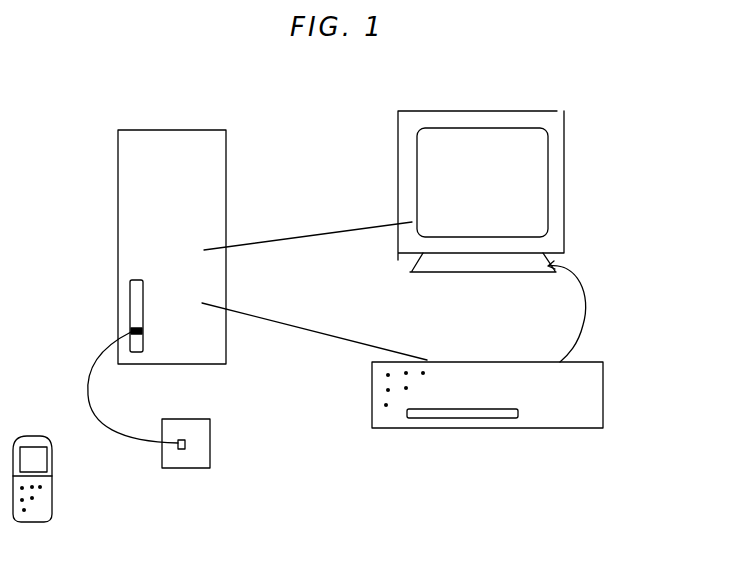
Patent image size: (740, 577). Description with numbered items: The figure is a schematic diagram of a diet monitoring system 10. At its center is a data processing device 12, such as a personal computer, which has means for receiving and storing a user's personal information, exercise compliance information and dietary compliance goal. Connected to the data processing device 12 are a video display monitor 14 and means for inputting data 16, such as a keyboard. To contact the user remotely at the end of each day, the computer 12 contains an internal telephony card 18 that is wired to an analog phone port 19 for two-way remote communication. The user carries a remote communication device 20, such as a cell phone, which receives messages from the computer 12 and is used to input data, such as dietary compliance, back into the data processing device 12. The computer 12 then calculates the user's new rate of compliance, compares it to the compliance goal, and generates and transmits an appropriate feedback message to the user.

The system 10 is at (567, 482).
The data processing device 12 is at (119, 170).
The video display monitor 14 is at (566, 177).
The means for inputting data 16 is at (604, 395).
The internal telephony card 18 is at (130, 300).
The analog phone port 19 is at (212, 440).
The remote communication device 20 is at (53, 483).